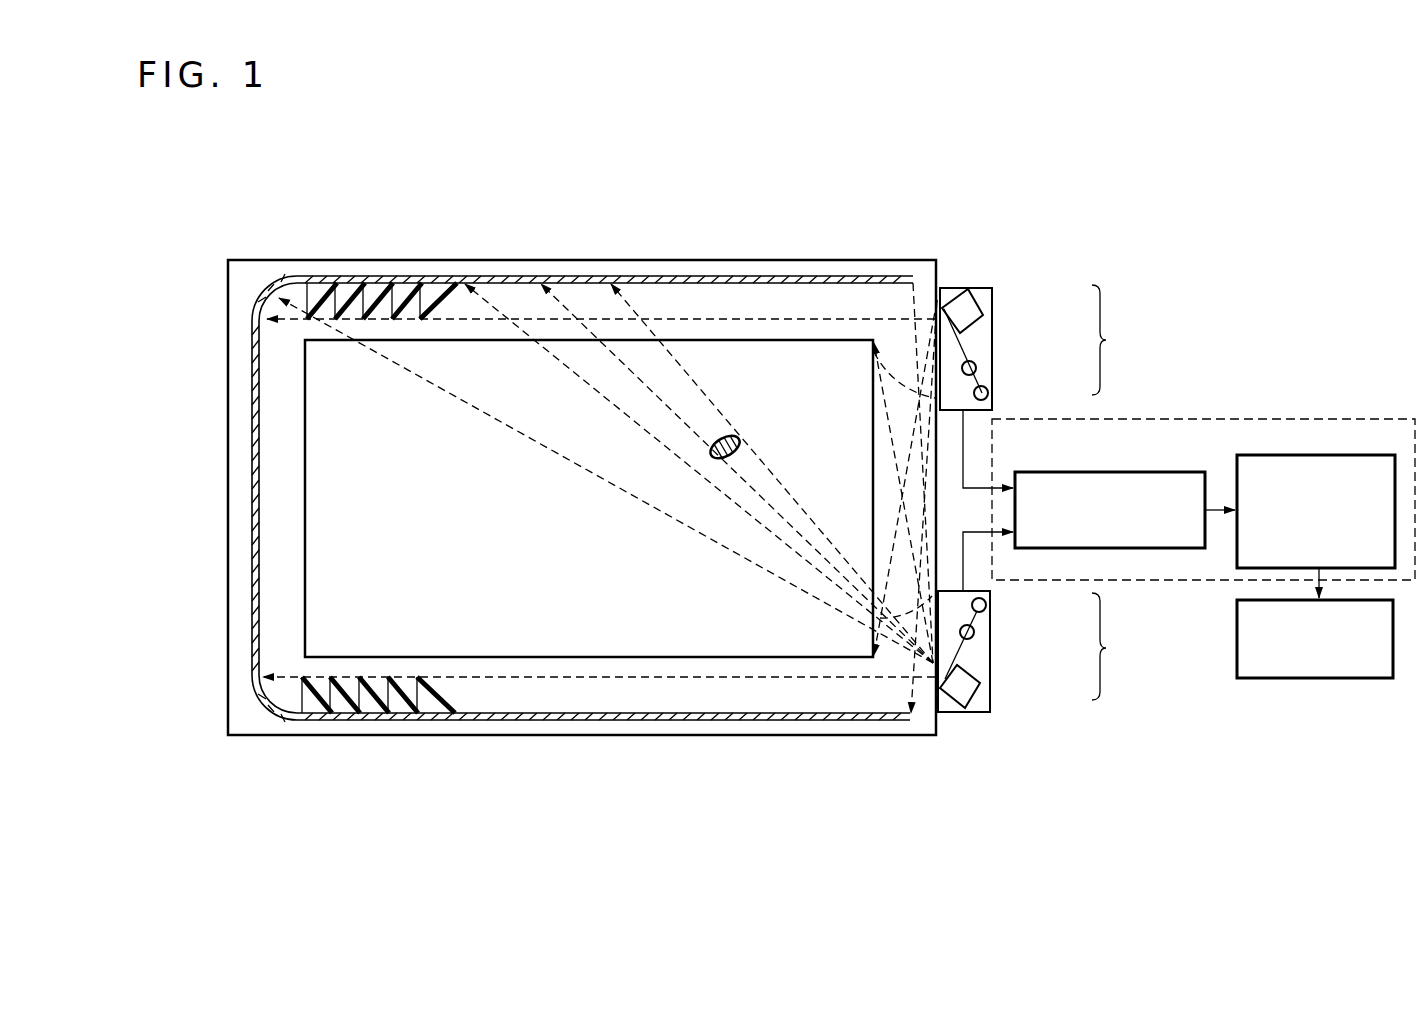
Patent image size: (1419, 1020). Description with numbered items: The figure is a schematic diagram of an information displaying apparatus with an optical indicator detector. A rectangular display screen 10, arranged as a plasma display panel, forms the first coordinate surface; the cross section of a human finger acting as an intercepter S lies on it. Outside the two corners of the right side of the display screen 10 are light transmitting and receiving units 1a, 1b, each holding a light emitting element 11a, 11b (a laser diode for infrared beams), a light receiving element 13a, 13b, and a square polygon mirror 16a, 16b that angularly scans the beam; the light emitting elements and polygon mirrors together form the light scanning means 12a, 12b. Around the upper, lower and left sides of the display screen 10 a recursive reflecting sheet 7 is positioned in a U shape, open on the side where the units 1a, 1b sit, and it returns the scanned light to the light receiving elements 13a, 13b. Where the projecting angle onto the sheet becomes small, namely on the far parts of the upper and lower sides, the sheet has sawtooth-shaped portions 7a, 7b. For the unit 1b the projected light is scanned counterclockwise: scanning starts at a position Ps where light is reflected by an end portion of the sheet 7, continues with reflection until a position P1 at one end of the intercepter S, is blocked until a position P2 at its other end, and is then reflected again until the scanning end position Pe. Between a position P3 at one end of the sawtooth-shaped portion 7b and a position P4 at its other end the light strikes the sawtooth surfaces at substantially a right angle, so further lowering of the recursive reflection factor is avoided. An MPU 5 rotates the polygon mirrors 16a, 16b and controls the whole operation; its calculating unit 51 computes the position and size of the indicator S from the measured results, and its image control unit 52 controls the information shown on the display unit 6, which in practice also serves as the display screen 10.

The light transmitting and receiving unit 1a is at (1054, 302).
The light transmitting and receiving unit 1b is at (1054, 685).
The MPU 5 is at (1258, 415).
The display unit 6 is at (1318, 680).
The recursive reflecting sheet 7 is at (504, 722).
The sawtooth-shaped portion 7a is at (455, 741).
The sawtooth-shaped portion 7b is at (460, 255).
The display screen 10 is at (720, 634).
The light emitting element 11a is at (989, 392).
The light emitting element 11b is at (987, 608).
The light scanning means 12a is at (1130, 340).
The light scanning means 12b is at (1131, 646).
The light receiving element 13a is at (977, 366).
The light receiving element 13b is at (975, 636).
The polygon mirror 16a is at (990, 296).
The polygon mirror 16b is at (978, 690).
The calculating unit 51 is at (1058, 472).
The image control unit 52 is at (1280, 455).
The intercepter S is at (742, 440).
The position of one end of the intercepter P1 is at (686, 374).
The position of the other end of the intercepter P2 is at (630, 376).
The position of one end of the sawtooth-shaped portion P3 is at (540, 350).
The position of the other end of the sawtooth-shaped portion P4 is at (483, 420).
The scanning starting position Ps is at (920, 438).
The scanning end position Pe is at (512, 677).